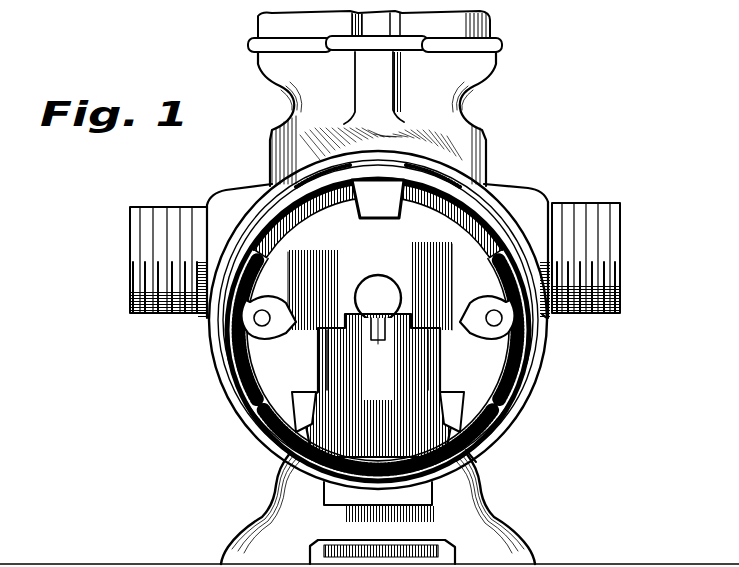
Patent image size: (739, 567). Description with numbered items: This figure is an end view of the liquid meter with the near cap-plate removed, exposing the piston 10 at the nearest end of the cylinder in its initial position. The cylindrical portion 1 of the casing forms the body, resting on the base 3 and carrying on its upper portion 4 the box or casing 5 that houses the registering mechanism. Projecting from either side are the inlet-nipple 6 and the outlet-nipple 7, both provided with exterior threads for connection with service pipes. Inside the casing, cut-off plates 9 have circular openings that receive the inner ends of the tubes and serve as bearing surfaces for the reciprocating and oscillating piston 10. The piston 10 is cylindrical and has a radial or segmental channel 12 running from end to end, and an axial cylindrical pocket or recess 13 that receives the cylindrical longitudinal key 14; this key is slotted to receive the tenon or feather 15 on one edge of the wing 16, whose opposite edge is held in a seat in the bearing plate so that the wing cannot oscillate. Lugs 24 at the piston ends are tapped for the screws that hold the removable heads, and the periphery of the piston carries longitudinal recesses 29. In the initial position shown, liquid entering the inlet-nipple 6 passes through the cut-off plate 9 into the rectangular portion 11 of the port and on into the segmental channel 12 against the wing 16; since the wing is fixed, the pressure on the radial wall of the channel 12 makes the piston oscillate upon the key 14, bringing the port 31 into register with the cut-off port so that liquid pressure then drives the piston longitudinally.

The cylindrical portion of the casing 1 is at (526, 386).
The base of the casing 3 is at (378, 508).
The upper portion of the casing 4 is at (455, 92).
The box or casing 5 is at (492, 22).
The inlet-nipple 6 is at (149, 260).
The outlet-nipple 7 is at (618, 257).
The cut-off plate 9 is at (233, 360).
The piston 10 is at (268, 262).
The rectangular portion of the port 11 is at (410, 505).
The radial or segmental channel 12 is at (472, 452).
The axial cylindrical pocket or recess 13 is at (398, 300).
The cylindrical longitudinal key 14 is at (378, 298).
The tenon or feather 15 is at (378, 344).
The wing 16 is at (378, 385).
The lugs 24 is at (262, 336).
The longitudinal recesses 29 is at (510, 403).
The port 31 is at (318, 196).